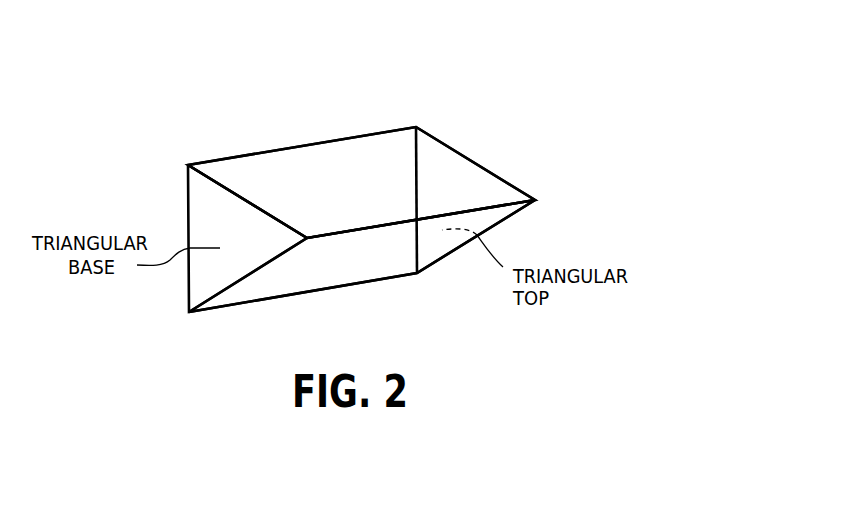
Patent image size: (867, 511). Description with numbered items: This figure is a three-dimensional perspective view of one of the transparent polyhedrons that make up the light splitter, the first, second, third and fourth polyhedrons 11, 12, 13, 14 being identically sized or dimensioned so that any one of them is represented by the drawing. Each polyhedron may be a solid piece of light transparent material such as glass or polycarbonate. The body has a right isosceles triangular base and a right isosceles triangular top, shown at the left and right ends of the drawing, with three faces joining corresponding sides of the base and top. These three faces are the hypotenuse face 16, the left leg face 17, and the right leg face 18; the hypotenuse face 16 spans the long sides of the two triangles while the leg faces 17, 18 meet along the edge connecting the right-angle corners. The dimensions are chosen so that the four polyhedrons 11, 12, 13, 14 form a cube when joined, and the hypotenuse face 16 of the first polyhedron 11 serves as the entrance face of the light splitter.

The first transparent polyhedron 11 is at (441, 138).
The second transparent polyhedron 12 is at (361, 219).
The third transparent polyhedron 13 is at (361, 219).
The fourth transparent polyhedron 14 is at (361, 219).
The hypotenuse face 16 is at (278, 197).
The left leg face 17 is at (371, 194).
The right leg face 18 is at (372, 272).